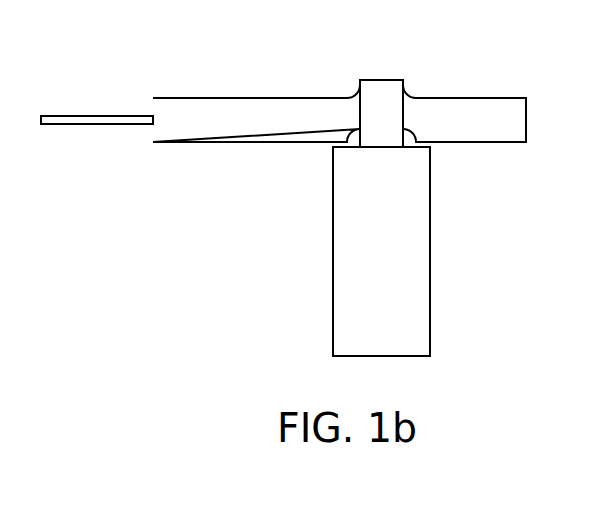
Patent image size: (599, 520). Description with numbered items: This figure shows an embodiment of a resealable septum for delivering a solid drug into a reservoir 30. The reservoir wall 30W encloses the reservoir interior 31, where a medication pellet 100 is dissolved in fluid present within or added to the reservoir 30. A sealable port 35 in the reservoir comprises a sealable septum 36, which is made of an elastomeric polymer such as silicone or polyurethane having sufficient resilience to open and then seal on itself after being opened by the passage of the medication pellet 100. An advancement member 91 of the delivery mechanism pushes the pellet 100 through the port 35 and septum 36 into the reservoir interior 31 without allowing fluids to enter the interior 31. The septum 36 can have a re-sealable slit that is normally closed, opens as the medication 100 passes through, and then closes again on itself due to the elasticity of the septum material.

The reservoir 30 is at (80, 116).
The reservoir wall 30W is at (170, 125).
The reservoir interior 31 is at (247, 92).
The medication pellet 100 is at (382, 88).
The sealable port 35 is at (448, 105).
The sealable septum 36 is at (471, 120).
The advancement member 91 is at (393, 256).